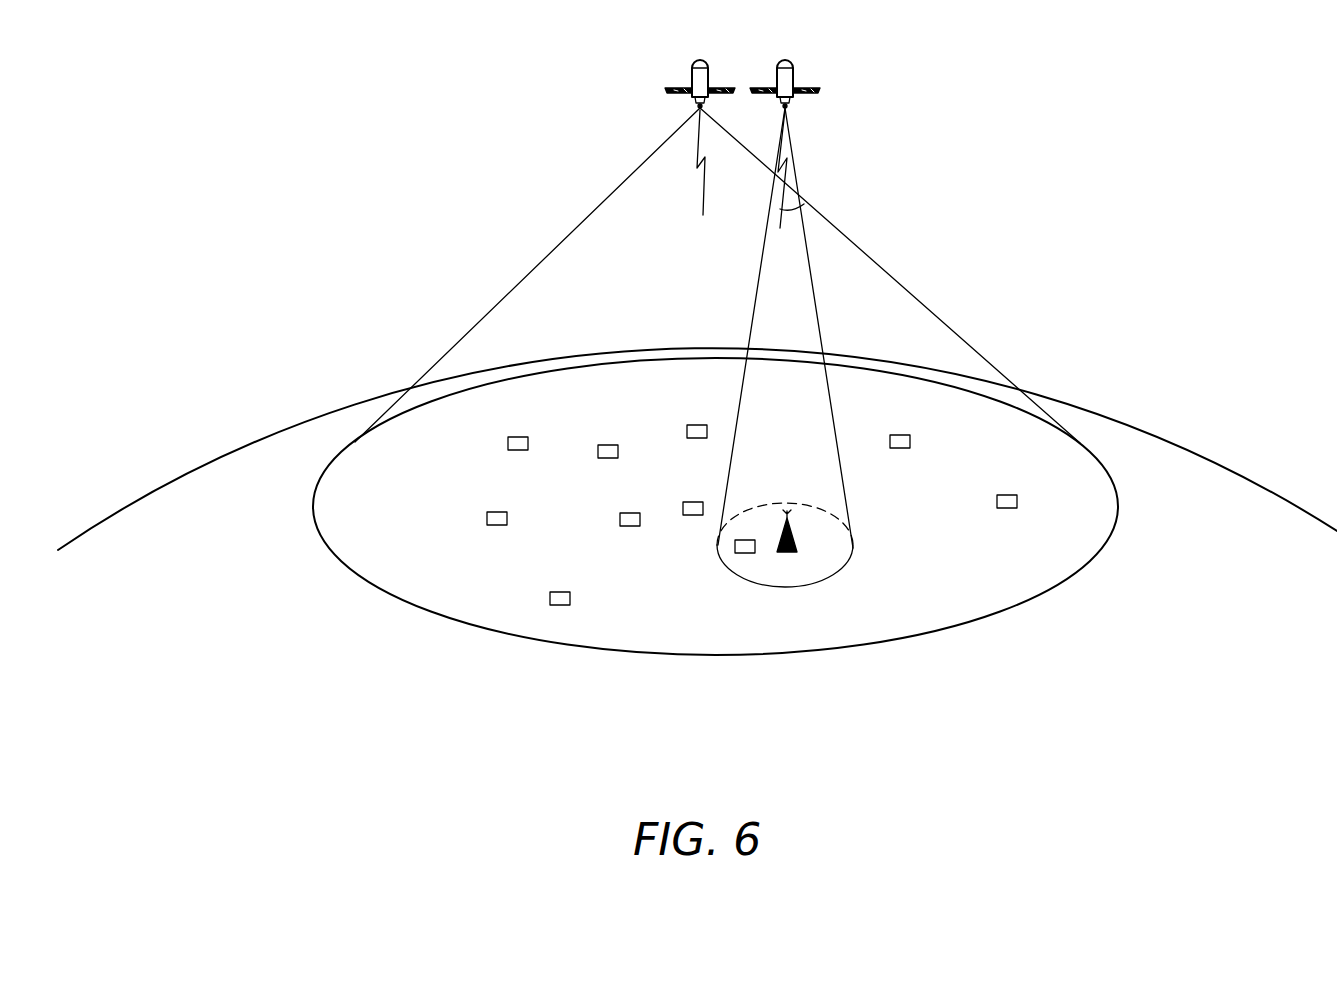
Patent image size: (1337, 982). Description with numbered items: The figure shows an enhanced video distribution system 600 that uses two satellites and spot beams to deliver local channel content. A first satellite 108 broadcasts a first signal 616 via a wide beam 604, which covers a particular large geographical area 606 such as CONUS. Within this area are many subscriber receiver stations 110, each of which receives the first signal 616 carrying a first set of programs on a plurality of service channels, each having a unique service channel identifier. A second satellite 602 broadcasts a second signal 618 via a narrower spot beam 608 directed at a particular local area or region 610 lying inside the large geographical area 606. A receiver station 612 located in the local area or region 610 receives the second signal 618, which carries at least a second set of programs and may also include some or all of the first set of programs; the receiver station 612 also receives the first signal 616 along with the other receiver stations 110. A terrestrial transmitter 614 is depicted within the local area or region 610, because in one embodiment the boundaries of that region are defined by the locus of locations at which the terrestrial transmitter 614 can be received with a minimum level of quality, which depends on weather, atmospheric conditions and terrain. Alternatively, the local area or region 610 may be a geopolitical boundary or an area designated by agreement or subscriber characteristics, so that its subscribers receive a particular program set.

The enhanced video distribution system 600 is at (1063, 157).
The satellite 108 is at (692, 72).
The second satellite 602 is at (815, 90).
The beam 604 is at (542, 253).
The large geographical area 606 is at (360, 575).
The spot beam 608 is at (793, 160).
The local area or region 610 is at (853, 551).
The receiver station 612 is at (735, 546).
The terrestrial transmitter 614 is at (788, 553).
The first signal 616 is at (703, 184).
The second signal 618 is at (803, 206).
The receiver stations 110 is at (528, 443).